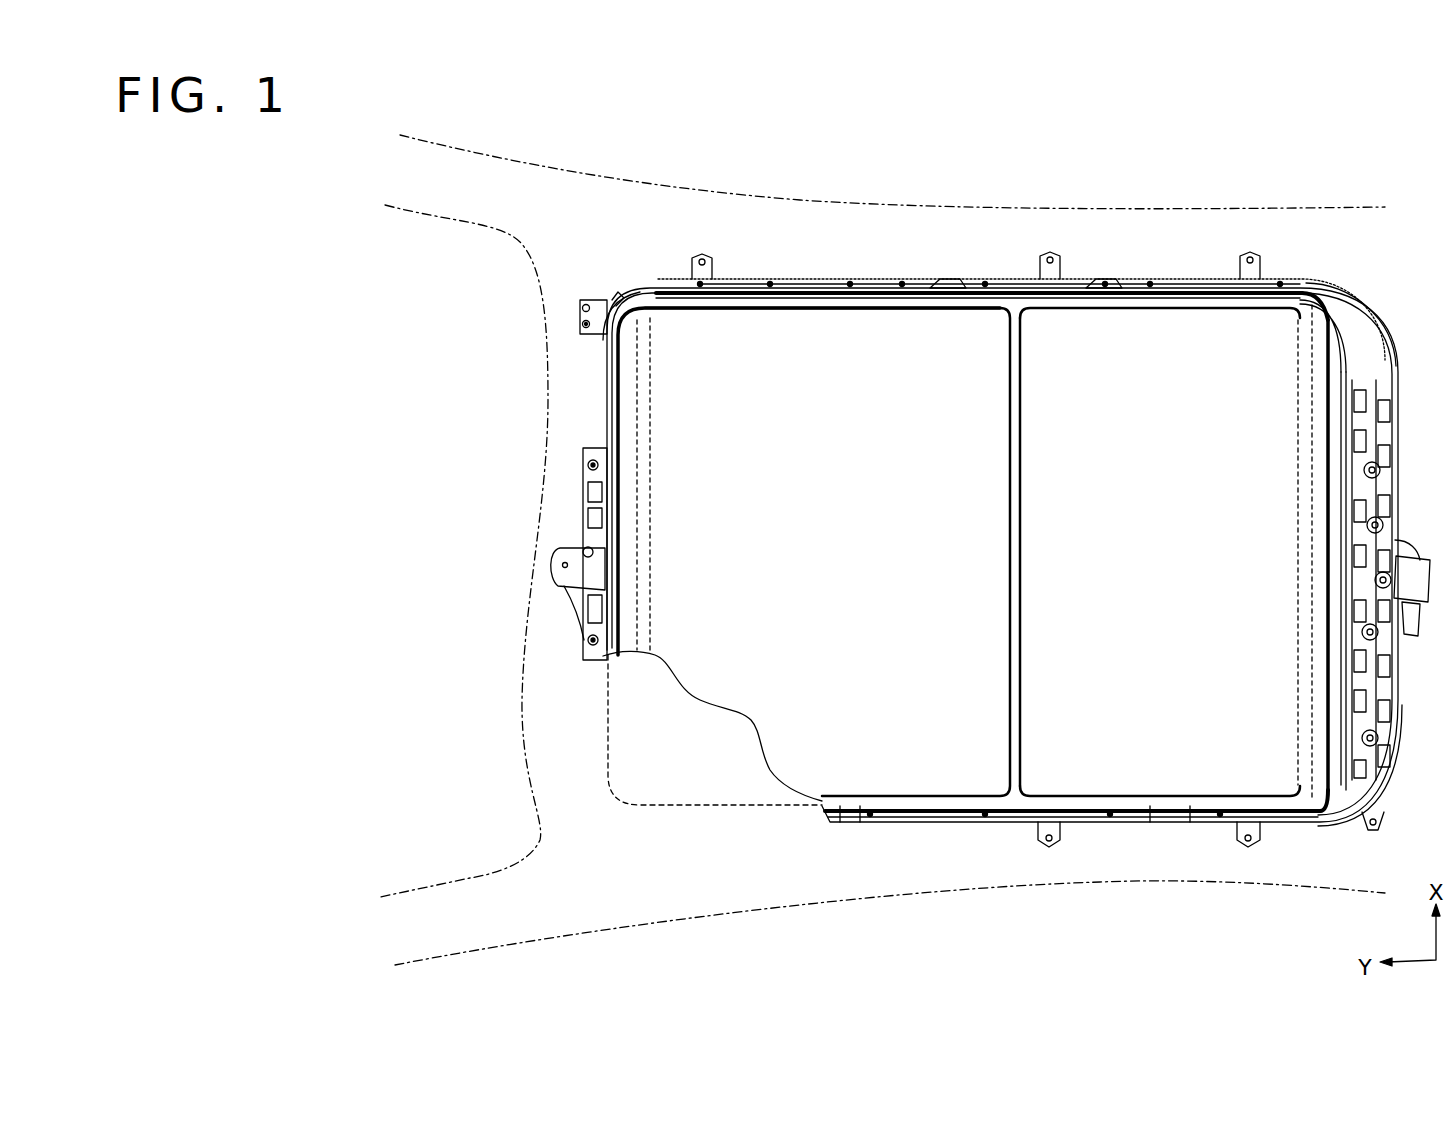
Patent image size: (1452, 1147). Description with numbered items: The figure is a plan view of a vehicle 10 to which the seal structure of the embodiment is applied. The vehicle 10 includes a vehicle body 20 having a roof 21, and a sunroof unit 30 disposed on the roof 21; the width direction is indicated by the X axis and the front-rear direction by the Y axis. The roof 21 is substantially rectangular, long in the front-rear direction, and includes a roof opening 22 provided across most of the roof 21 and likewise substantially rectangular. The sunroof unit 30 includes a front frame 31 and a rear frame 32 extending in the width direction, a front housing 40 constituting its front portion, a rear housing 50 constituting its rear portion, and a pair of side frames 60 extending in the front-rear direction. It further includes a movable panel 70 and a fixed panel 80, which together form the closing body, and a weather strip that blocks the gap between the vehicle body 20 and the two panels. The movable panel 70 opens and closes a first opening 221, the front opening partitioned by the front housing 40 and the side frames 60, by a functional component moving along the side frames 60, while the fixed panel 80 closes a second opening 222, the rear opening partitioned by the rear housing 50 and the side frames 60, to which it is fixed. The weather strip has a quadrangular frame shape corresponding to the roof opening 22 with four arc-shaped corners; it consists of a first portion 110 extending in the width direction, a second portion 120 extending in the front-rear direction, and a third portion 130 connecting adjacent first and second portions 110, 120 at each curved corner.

The vehicle 10 is at (1270, 186).
The vehicle body 20 is at (470, 878).
The roof 21 is at (1006, 205).
The roof opening 22 is at (703, 806).
The sunroof unit 30 is at (1384, 304).
The front frame 31 is at (654, 438).
The rear frame 32 is at (1297, 484).
The front housing 40 is at (586, 448).
The rear housing 50 is at (1400, 446).
The side frames 60 is at (786, 281).
The movable panel 70 is at (843, 782).
The fixed panel 80 is at (1171, 785).
The first portion 110 is at (1085, 312).
The second portion 120 is at (802, 310).
The third portion 130 is at (628, 300).
The first opening 221 is at (958, 296).
The second opening 222 is at (1202, 300).